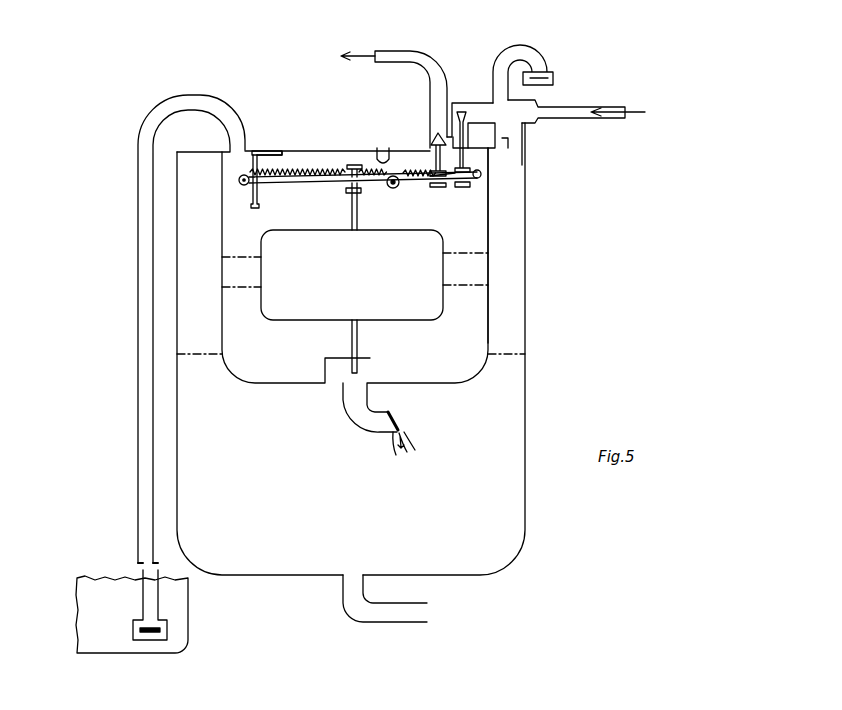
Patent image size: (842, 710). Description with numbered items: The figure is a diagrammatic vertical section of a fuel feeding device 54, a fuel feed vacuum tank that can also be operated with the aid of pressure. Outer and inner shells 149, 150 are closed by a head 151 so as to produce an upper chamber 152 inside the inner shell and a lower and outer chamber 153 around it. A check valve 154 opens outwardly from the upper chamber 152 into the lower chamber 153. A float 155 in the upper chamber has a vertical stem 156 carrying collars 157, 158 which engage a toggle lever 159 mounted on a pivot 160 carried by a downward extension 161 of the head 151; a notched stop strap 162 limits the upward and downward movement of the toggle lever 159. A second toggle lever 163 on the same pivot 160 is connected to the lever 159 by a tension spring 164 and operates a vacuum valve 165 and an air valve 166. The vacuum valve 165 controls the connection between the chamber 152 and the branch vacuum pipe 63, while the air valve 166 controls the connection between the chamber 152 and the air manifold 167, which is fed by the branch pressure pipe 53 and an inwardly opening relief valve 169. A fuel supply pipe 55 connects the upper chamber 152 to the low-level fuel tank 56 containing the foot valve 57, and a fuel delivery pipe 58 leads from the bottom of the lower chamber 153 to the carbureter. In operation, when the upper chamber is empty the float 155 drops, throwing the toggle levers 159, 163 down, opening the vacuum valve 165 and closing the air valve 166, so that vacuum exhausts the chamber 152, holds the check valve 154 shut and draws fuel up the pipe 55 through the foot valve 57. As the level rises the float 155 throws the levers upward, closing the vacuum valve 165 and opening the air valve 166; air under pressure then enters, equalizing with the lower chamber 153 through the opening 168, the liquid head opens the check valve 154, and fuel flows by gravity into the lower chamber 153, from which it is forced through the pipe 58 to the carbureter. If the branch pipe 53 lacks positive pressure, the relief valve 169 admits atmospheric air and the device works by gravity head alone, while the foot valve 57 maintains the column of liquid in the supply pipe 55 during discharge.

The branch pressure pipe 53 is at (570, 110).
The fuel feeding device 54 is at (303, 155).
The fuel supply pipe 55 is at (139, 489).
The low-level fuel tank 56 is at (180, 611).
The foot valve 57 is at (148, 633).
The fuel delivery pipe 58 is at (395, 615).
The branch vacuum pipe 63 is at (381, 51).
The outer shell 149 is at (527, 385).
The inner shell 150 is at (493, 258).
The head 151 is at (275, 148).
The upper chamber 152 is at (473, 302).
The lower chamber 153 is at (497, 512).
The check valve 154 is at (395, 415).
The float 155 is at (442, 234).
The vertical stem 156 is at (358, 222).
The collar 157 is at (353, 163).
The collar 158 is at (348, 194).
The toggle lever 159 is at (330, 182).
The pivot 160 is at (397, 186).
The downward extension 161 is at (396, 152).
The stop strap 162 is at (255, 185).
The second toggle lever 163 is at (428, 184).
The tension spring 164 is at (330, 177).
The vacuum valve 165 is at (437, 136).
The air valve 166 is at (460, 112).
The air manifold 167 is at (483, 113).
The opening 168 is at (502, 138).
The relief valve 169 is at (540, 73).